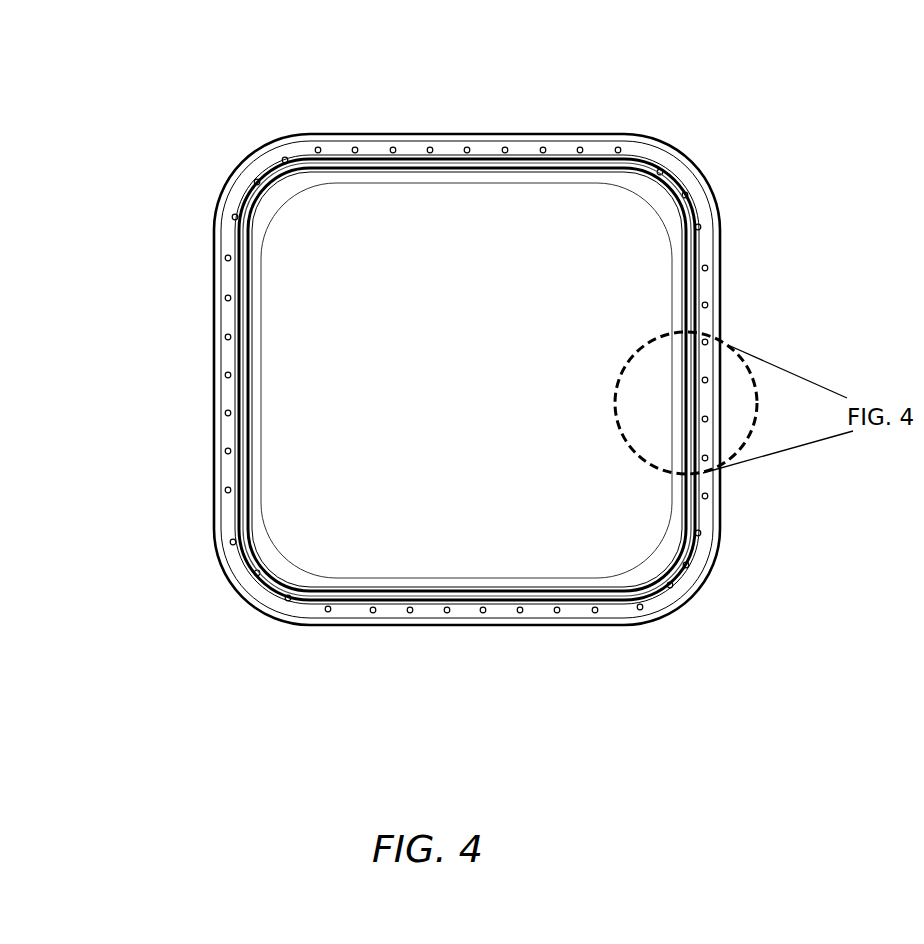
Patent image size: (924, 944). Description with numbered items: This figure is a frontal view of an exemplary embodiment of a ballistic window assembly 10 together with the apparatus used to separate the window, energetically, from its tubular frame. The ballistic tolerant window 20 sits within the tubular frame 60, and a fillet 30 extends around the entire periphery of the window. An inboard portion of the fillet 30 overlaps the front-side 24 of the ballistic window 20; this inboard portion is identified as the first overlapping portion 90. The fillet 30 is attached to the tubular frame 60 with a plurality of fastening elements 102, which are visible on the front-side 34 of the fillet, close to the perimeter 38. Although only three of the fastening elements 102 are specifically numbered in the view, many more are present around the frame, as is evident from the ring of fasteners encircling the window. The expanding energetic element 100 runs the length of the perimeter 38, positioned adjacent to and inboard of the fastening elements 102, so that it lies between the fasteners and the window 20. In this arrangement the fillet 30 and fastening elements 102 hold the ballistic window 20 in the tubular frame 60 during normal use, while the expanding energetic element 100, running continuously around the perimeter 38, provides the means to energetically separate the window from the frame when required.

The window assembly 10 is at (776, 122).
The ballistic window 20 is at (462, 392).
The front-side of the ballistic tolerant window 24 is at (436, 242).
The fillet 30 is at (708, 313).
The front-side of the fillet 34 is at (272, 172).
The perimeter 38 is at (710, 275).
The tubular frame 60 is at (459, 134).
The first overlapping portion 90 is at (640, 195).
The expanding energetic element 100 is at (689, 218).
The fastening elements 102 is at (708, 498).